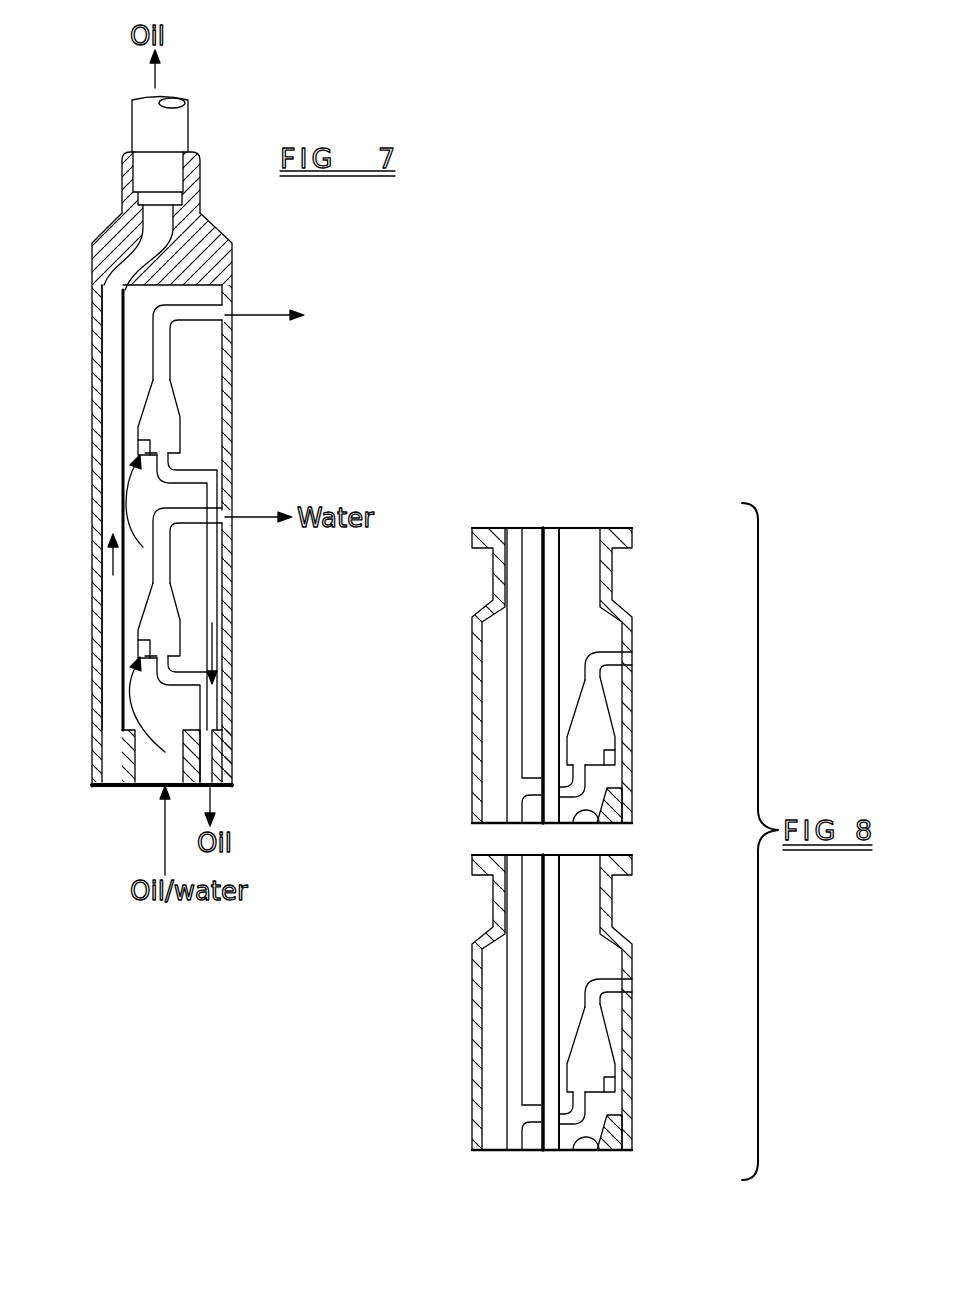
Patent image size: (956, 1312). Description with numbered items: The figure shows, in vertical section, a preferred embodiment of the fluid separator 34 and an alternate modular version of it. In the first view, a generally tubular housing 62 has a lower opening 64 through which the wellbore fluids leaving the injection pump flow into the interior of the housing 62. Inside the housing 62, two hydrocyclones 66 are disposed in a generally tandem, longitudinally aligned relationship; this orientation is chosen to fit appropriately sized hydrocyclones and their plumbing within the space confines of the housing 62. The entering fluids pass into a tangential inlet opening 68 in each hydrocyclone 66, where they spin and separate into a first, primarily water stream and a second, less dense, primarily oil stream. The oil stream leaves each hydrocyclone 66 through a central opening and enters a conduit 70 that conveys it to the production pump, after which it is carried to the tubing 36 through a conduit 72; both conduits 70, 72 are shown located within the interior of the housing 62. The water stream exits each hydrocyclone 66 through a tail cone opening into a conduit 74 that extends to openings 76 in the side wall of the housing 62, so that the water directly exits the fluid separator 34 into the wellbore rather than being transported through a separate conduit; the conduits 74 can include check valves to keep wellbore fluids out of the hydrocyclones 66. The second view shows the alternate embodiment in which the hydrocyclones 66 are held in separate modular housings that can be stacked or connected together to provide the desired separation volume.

The fluid separator 34 is at (194, 455).
The tubing 36 is at (185, 115).
The tubular housing 62 is at (232, 652).
The lower opening 64 is at (135, 784).
The hydrocyclone 66 is at (175, 410).
The tangential inlet opening 68 is at (138, 443).
The conduit 70 is at (200, 480).
The conduit 72 is at (115, 588).
The conduit 74 is at (190, 318).
The opening 76 is at (232, 298).